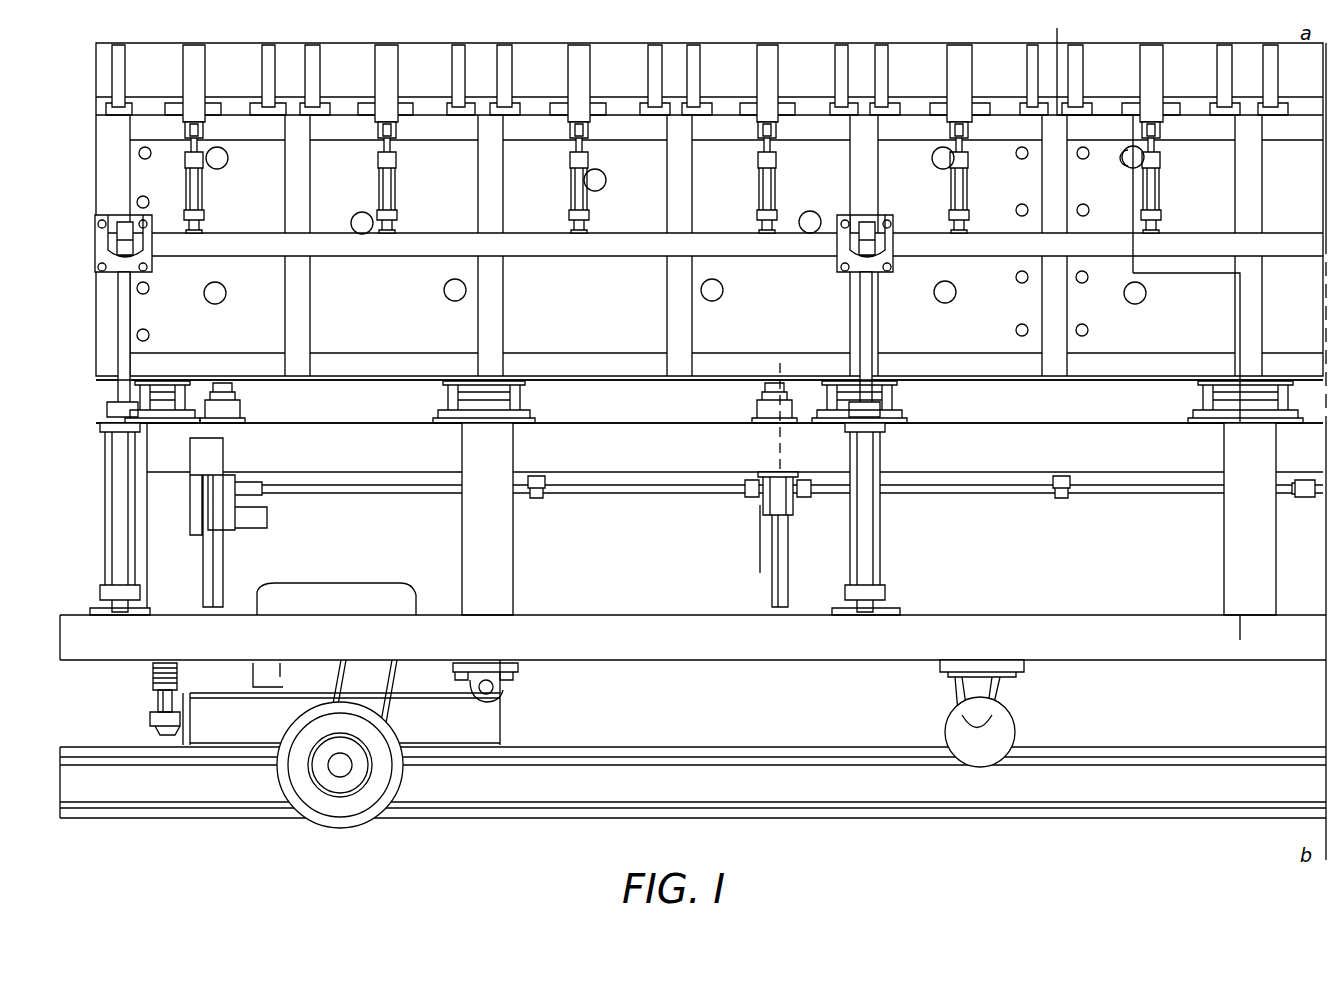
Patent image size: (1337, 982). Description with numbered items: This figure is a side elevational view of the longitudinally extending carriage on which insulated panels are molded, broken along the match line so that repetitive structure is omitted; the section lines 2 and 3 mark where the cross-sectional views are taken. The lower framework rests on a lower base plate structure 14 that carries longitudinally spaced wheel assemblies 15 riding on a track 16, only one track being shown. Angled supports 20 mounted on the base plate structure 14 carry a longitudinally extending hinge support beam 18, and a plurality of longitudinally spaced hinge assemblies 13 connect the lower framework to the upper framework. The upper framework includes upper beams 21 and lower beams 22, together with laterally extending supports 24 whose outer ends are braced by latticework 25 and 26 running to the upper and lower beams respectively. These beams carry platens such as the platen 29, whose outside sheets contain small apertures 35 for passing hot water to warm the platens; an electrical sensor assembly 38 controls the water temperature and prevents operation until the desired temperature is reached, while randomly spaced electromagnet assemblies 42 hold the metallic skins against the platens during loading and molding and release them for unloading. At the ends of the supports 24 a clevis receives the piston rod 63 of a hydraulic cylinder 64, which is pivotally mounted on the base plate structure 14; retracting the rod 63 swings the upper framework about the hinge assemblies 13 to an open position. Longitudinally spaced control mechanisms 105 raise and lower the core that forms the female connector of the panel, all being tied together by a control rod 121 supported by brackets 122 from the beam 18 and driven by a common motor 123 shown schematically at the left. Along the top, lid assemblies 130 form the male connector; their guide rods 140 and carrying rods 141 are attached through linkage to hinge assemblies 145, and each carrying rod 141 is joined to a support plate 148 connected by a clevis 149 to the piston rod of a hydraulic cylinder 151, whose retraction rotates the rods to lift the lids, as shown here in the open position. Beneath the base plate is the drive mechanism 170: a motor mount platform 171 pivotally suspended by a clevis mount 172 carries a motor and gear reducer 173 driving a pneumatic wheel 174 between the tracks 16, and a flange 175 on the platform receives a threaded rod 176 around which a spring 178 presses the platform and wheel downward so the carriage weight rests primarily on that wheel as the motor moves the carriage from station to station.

The section line 2- 2 is at (1057, 32).
The section line 3- 3 is at (780, 363).
The hinge assembly 13 is at (905, 401).
The lower base plate structure 14 is at (1032, 617).
The wheel assembly 15 is at (1012, 730).
The track 16 is at (733, 748).
The hinge support beam 18 is at (1098, 428).
The angled support 20 is at (513, 553).
The upper beam 21 is at (520, 127).
The lower beam 22 is at (600, 360).
The laterally extending support 24 is at (600, 248).
The latticework 25 is at (674, 202).
The latticework 26 is at (686, 318).
The platen 29 is at (829, 254).
The small apertures 35 is at (151, 158).
The electrical sensor assembly 38 is at (1128, 164).
The electromagnet assembly 42 is at (222, 168).
The piston rod 63 is at (882, 318).
The hydraulic cylinder 64 is at (882, 540).
The control mechanism 105 is at (760, 500).
The control rod 121 is at (392, 488).
The bracket 122 is at (538, 500).
The motor 123 is at (250, 533).
The lid assembly 130 is at (752, 165).
The guide rod 140 is at (262, 78).
The carrying rod 141 is at (385, 62).
The hinge assembly 145 is at (555, 98).
The support plate 148 is at (378, 128).
The clevis 149 is at (400, 132).
The hydraulic cylinder 151 is at (398, 178).
The drive mechanism 170 is at (516, 692).
The motor mount platform 171 is at (432, 695).
The clevis mount 172 is at (510, 677).
The motor and gear reducer 173 is at (390, 585).
The pneumatic wheel 174 is at (398, 800).
The flange 175 is at (150, 722).
The threaded rod 176 is at (157, 700).
The spring 178 is at (180, 678).